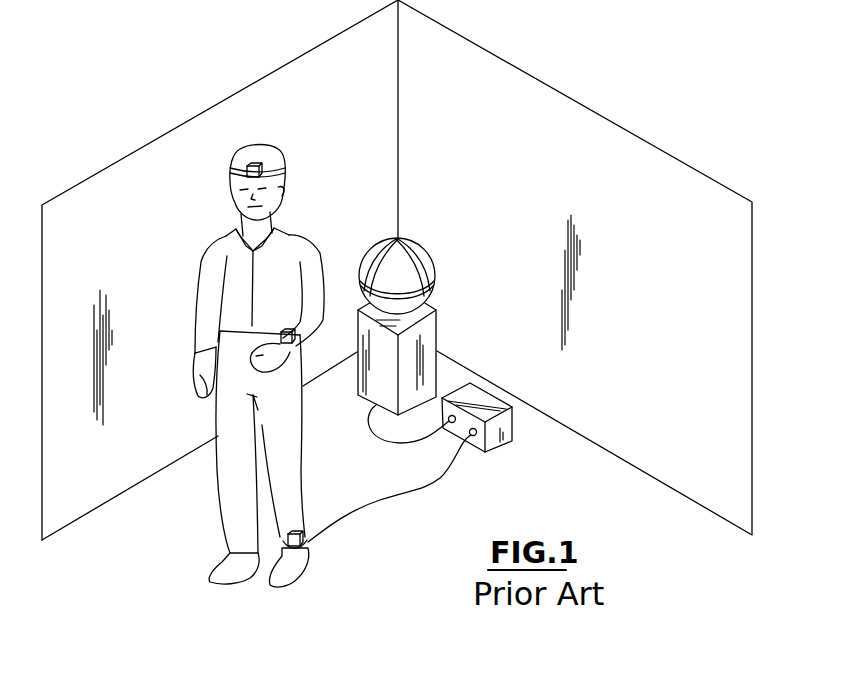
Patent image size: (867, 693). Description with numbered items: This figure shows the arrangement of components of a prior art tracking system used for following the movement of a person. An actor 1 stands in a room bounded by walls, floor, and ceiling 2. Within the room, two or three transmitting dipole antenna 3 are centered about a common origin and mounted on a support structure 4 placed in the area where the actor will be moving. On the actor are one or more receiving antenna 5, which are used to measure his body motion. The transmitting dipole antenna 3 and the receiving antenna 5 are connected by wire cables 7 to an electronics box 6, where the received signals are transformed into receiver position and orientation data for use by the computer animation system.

The actor 1 is at (206, 270).
The room walls, floor, and ceiling 2 is at (267, 92).
The transmitting dipole antenna 3 is at (420, 253).
The support structure 4 is at (432, 336).
The receiving antenna 5 is at (242, 150).
The electronics box 6 is at (500, 436).
The wire cables 7 is at (424, 486).